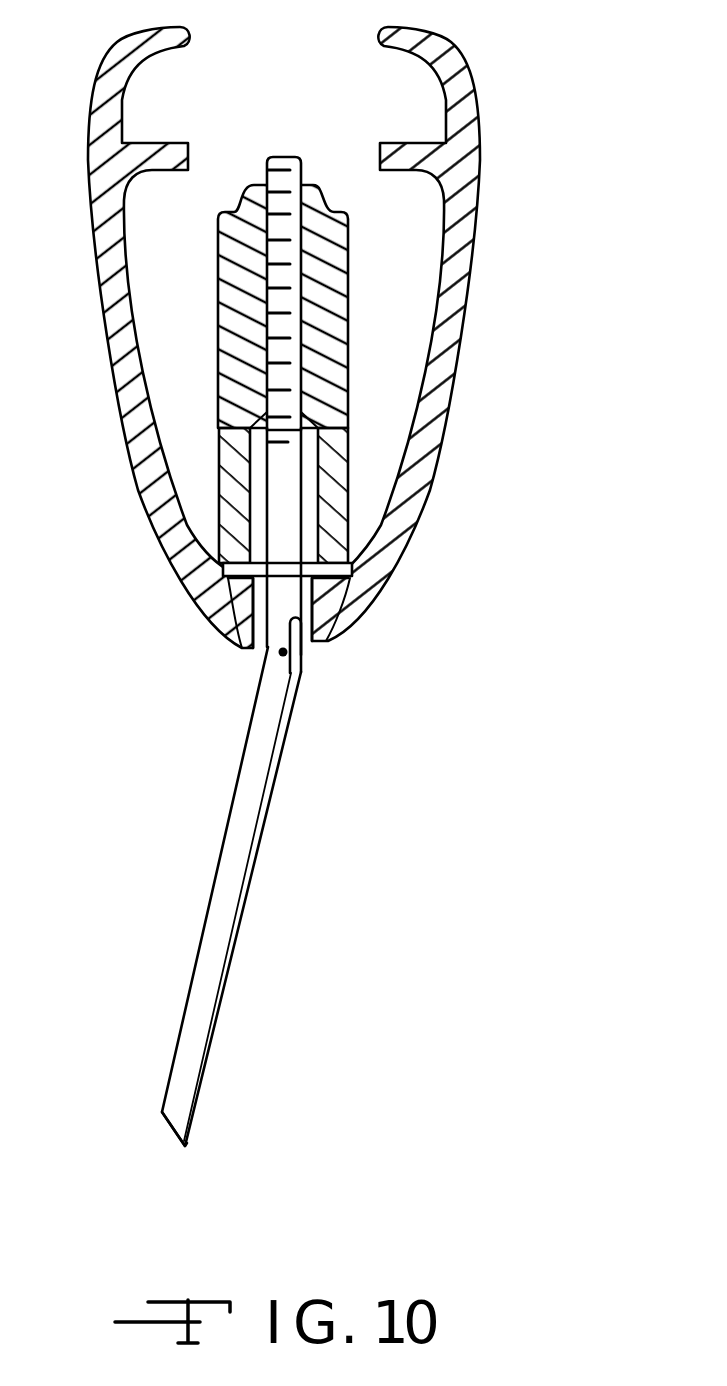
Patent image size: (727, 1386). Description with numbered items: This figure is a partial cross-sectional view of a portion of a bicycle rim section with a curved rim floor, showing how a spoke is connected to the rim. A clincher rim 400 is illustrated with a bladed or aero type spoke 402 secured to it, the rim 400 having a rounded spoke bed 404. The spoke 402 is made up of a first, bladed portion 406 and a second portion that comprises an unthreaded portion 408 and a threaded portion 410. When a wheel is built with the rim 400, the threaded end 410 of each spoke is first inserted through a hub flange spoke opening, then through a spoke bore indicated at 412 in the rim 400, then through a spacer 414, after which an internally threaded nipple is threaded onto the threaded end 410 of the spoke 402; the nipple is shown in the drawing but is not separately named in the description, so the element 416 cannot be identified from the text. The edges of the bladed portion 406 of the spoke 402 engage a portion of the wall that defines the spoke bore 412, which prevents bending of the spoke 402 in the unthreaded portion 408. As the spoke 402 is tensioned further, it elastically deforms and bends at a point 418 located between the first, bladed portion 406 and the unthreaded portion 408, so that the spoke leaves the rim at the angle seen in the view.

The clincher rim 400 is at (468, 293).
The spoke 402 is at (214, 871).
The rounded spoke bed 404 is at (245, 560).
The bladed portion 406 is at (184, 993).
The unthreaded portion 408 is at (303, 472).
The threaded portion 410 is at (283, 152).
The spoke bore 412 is at (298, 646).
The spacer 414 is at (353, 507).
The nut 416 is at (350, 273).
The bend point 418 is at (280, 652).